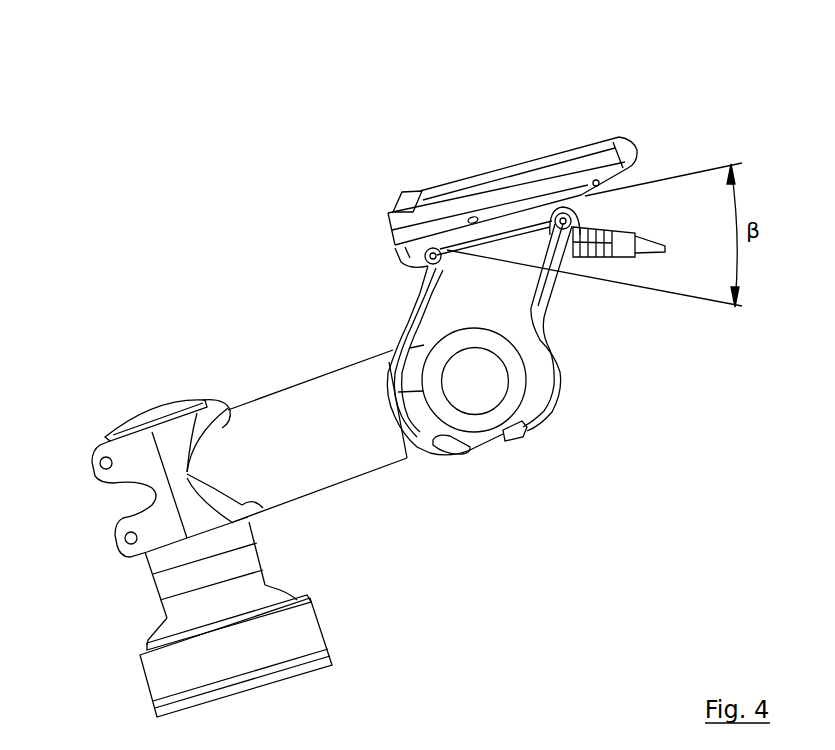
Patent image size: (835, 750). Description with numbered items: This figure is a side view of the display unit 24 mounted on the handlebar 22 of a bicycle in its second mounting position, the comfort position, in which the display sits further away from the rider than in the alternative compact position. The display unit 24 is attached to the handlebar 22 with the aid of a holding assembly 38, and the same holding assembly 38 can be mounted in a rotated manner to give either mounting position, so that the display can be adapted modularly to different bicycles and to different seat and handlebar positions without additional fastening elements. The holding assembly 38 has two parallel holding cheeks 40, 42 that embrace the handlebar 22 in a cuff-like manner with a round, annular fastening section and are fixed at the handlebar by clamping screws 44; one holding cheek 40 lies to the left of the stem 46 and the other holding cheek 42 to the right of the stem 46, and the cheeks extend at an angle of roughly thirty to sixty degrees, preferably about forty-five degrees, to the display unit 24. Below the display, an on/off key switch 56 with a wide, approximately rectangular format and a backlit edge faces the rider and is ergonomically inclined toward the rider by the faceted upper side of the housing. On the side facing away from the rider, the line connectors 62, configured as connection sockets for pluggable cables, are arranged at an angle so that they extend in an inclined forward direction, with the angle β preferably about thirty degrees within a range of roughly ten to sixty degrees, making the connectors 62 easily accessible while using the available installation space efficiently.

The display unit 24 is at (467, 180).
The on/off key switch 56 is at (398, 203).
The holding assembly 38 is at (360, 246).
The line connectors 62 is at (592, 265).
The holding cheek 40 is at (419, 338).
The holding cheek 42 is at (537, 277).
The handlebar 22 is at (518, 380).
The clamping screws 44 is at (498, 432).
The stem 46 is at (360, 450).